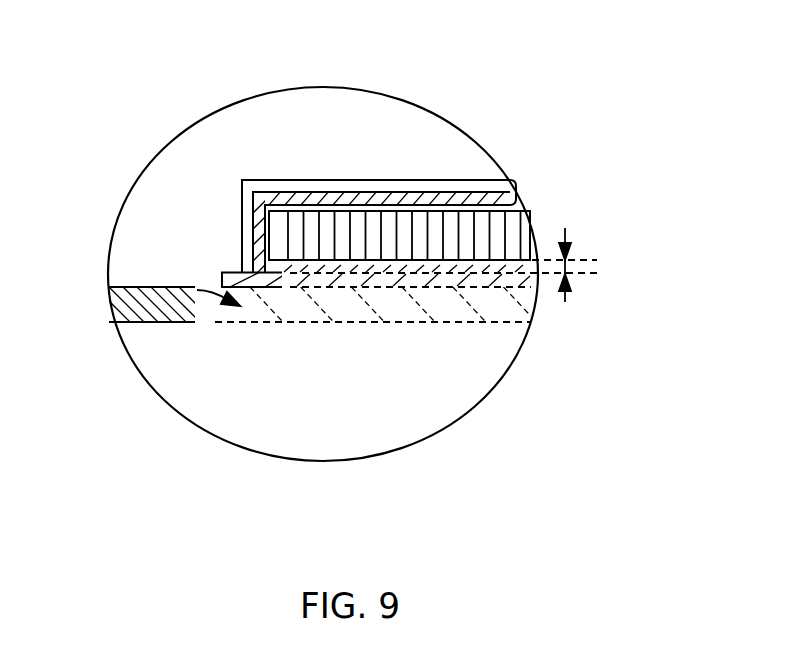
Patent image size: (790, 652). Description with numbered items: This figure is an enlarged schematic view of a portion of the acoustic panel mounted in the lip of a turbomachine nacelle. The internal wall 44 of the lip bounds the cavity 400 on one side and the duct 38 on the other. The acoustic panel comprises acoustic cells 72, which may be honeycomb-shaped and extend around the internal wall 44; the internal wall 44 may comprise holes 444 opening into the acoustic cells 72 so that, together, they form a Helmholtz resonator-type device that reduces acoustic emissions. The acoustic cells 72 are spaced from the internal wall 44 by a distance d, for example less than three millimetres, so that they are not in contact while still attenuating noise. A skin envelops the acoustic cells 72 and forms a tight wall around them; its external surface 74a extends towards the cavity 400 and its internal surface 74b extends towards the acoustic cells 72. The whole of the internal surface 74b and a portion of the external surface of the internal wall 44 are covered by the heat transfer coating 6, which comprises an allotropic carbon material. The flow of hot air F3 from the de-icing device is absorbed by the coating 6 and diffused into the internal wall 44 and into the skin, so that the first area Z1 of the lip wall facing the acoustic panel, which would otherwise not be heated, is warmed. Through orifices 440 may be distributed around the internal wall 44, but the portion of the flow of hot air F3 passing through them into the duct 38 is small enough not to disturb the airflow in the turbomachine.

The flow of hot air F3 is at (186, 276).
The internal wall 44 is at (150, 303).
The cavity 400 is at (412, 156).
The external surface of the skin 74a is at (420, 180).
The internal surface of the skin 74b is at (482, 193).
The heat transfer coating 6 is at (495, 195).
The acoustic cells 72 is at (485, 237).
The distance d is at (570, 243).
The duct 38 is at (403, 399).
The first area Z1 is at (480, 341).
The through orifices 440 is at (205, 323).
The holes 444 is at (324, 303).